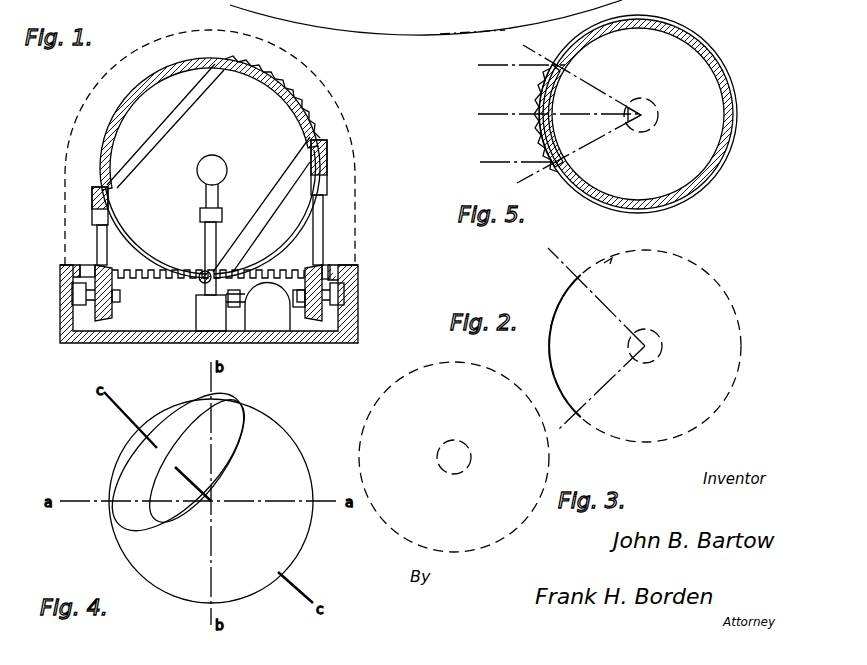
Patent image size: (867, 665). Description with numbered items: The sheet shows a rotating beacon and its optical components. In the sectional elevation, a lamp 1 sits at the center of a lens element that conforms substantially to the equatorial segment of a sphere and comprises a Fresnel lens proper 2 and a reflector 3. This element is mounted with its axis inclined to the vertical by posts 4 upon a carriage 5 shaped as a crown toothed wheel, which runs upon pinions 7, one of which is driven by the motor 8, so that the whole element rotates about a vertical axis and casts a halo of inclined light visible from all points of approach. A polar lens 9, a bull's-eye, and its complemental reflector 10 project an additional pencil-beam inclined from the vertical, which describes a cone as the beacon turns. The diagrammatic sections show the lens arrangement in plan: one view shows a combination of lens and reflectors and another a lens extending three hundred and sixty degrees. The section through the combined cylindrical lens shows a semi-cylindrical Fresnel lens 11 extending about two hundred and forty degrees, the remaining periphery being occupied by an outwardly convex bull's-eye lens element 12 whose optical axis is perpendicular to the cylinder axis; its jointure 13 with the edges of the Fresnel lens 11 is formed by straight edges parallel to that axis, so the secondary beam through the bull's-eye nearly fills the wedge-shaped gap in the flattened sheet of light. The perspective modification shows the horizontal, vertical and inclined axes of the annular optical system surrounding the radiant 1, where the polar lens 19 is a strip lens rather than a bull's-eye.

In FIG. 1, the lamp 1 is at (220, 162).
In FIG. 1, the lens proper 2 is at (288, 101).
In FIG. 1, the reflector 3 is at (138, 246).
In FIG. 1, the posts 4 is at (97, 242).
In FIG. 1, the carriage 5 is at (95, 266).
In FIG. 1, the pinions 7 is at (103, 320).
In FIG. 1, the motor 8 is at (265, 307).
In FIG. 1, the polar lens 9 is at (140, 90).
In FIG. 1, the complemental reflector 10 is at (280, 205).
In FIG. 5, the Fresnel lens 11 is at (722, 58).
In FIG. 5, the bull's-eye lens element 12 is at (548, 122).
In FIG. 5, the jointure 13 is at (553, 64).
In FIG. 4, the polar lens 19 is at (166, 420).